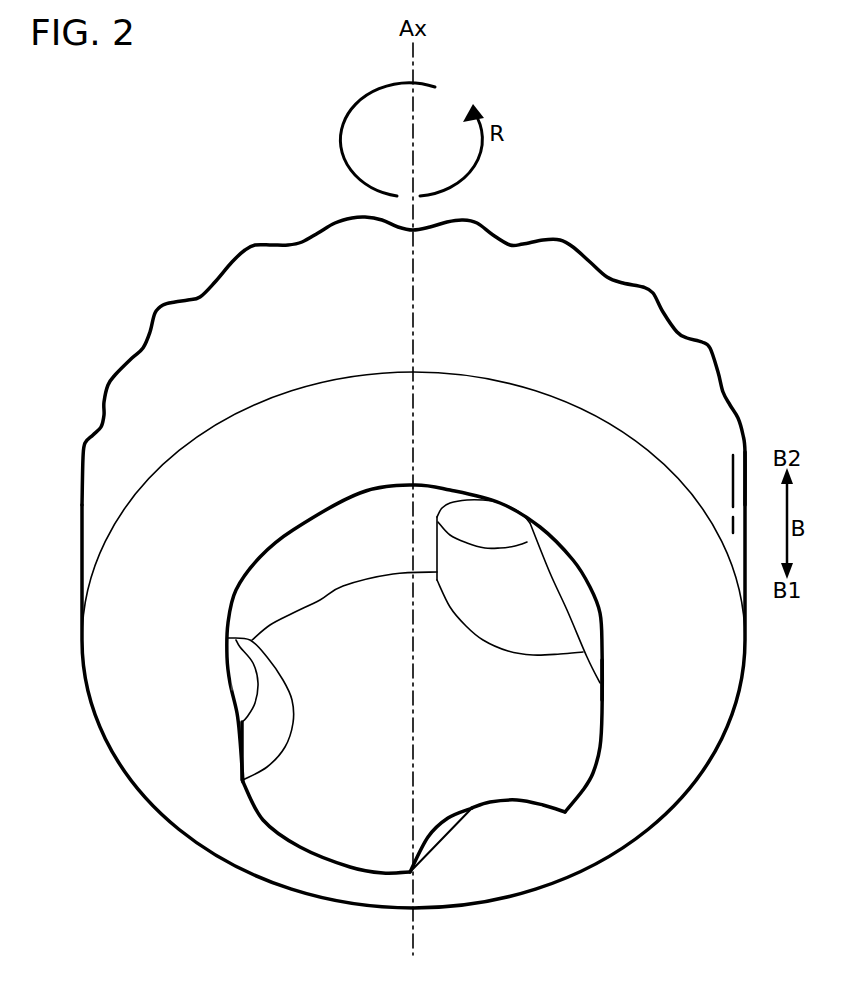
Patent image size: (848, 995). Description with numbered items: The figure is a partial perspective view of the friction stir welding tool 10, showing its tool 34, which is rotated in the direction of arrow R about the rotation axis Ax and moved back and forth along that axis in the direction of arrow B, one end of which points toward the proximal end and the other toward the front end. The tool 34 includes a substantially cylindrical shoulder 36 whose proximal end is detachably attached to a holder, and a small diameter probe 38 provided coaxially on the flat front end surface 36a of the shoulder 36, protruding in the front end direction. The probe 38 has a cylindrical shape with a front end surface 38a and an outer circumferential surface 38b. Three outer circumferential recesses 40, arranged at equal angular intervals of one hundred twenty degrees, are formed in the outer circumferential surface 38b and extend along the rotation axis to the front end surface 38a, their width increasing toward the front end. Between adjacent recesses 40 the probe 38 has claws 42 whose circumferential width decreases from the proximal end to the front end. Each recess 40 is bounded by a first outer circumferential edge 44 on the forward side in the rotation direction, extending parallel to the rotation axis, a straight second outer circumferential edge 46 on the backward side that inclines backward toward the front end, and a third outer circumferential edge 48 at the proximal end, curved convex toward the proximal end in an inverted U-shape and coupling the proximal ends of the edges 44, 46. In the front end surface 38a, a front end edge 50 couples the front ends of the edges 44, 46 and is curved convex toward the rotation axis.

The welding tool 10 is at (78, 139).
The tool 34 is at (118, 139).
The shoulder 36 is at (93, 530).
The front end surface of the shoulder 36a is at (626, 820).
The probe 38 is at (293, 850).
The front end surface of the probe 38a is at (348, 838).
The outer circumferential surface of the probe 38b is at (595, 652).
The outer circumferential recess 40 is at (533, 587).
The claw 42 is at (295, 625).
The first outer circumferential edge 44 is at (435, 537).
The second outer circumferential edge 46 is at (567, 608).
The third outer circumferential edge 48 is at (493, 508).
The front end edge 50 is at (480, 643).